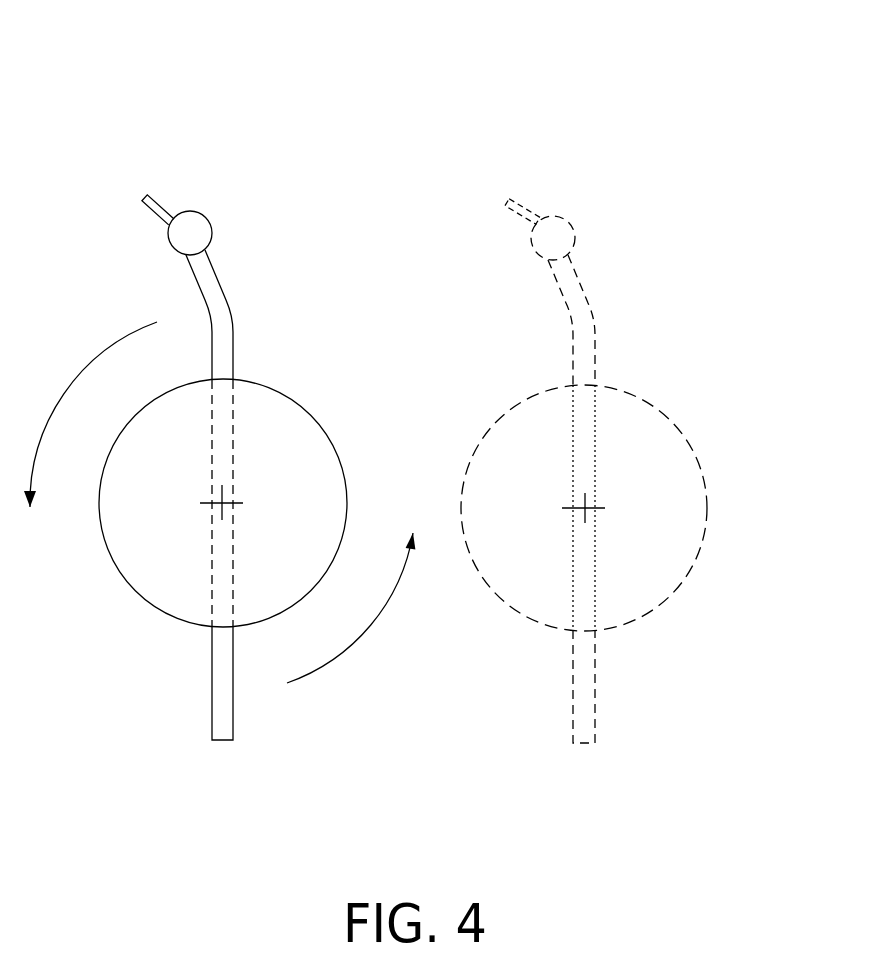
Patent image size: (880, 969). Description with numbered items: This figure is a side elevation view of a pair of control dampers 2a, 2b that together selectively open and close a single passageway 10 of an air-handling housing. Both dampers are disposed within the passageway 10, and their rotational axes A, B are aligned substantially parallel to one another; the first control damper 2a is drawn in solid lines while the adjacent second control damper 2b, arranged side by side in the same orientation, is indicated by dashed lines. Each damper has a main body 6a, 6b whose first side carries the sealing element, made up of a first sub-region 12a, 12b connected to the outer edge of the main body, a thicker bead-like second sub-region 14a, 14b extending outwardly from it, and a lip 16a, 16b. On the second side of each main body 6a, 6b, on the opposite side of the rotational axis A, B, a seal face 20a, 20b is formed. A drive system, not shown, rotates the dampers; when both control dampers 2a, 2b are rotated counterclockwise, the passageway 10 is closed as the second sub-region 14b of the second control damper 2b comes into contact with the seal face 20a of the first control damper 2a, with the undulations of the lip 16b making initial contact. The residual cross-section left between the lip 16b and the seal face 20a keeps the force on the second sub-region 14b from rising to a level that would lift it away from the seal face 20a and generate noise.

The first control damper 2a is at (88, 138).
The second control damper 2b is at (512, 117).
The main body 6a is at (224, 428).
The main body 6b is at (583, 447).
The passageway 10 is at (420, 473).
The first sub-region 12a is at (245, 534).
The first sub-region 12b is at (586, 513).
The second sub-region 14a is at (198, 232).
The second sub-region 14b is at (557, 230).
The lip 16a is at (158, 201).
The lip 16b is at (518, 203).
The seal face 20a is at (220, 697).
The seal face 20b is at (577, 693).
The rotational axis A is at (222, 505).
The rotational axis B is at (585, 508).